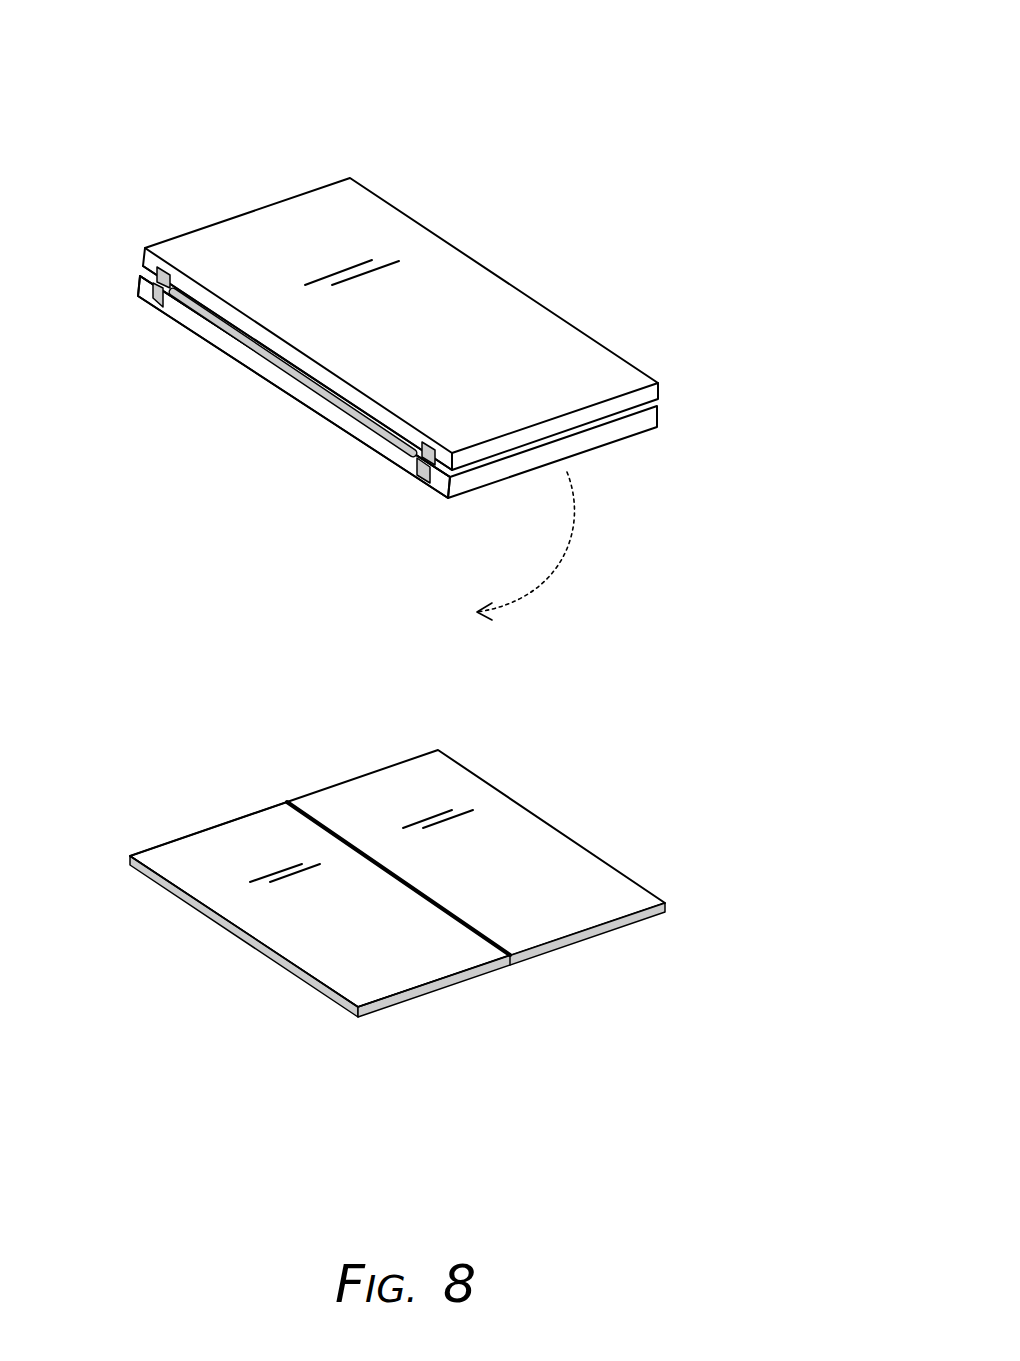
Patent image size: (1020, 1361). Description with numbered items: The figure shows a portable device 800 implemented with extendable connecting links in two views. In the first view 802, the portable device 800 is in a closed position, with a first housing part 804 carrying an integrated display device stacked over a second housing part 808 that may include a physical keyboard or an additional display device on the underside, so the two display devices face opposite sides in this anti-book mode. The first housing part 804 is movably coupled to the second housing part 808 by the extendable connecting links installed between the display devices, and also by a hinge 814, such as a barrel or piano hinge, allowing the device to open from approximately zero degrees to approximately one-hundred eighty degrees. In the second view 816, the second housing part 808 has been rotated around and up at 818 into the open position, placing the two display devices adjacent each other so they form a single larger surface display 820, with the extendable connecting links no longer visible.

The portable device 800 is at (684, 78).
The first view 802 is at (458, 172).
The first housing part 804 is at (583, 420).
The second housing part 808 is at (487, 475).
The hinge 814 is at (352, 415).
The second view 816 is at (246, 773).
The rotation of second housing part 818 is at (525, 546).
The surface display 820 is at (508, 918).